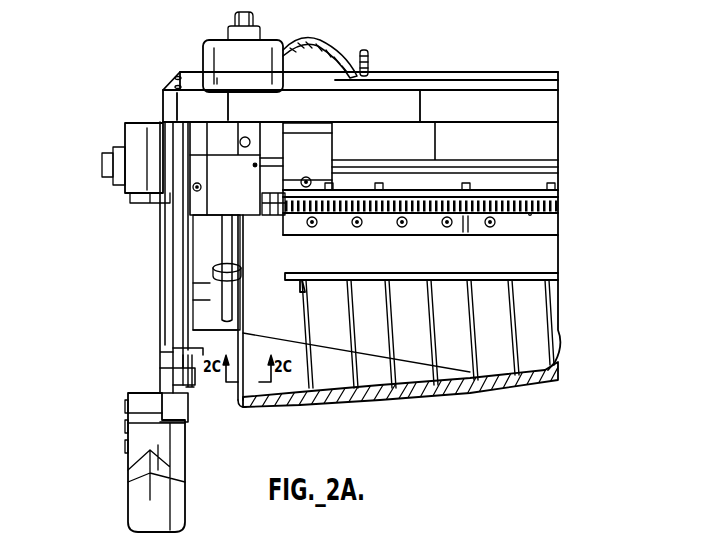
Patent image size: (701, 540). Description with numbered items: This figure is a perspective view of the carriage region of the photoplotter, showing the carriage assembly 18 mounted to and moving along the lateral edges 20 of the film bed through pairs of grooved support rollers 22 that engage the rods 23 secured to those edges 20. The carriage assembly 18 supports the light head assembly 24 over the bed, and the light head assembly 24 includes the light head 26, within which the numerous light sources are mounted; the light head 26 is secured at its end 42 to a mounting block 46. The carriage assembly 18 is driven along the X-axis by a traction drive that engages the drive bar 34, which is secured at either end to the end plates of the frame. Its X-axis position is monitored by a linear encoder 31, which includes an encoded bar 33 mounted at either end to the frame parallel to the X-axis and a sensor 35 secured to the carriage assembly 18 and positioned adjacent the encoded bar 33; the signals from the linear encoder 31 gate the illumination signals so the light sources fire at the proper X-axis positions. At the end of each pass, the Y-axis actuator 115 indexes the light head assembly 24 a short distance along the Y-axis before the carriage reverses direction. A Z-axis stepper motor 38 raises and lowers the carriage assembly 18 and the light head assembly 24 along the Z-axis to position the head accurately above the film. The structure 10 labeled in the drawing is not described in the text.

The finned structure / base 10 is at (448, 380).
The carriage assembly 18 is at (178, 74).
The lateral edges 20 is at (246, 404).
The grooved support rollers 22 is at (240, 283).
The rods 23 is at (250, 409).
The light head assembly 24 is at (382, 228).
The light head 26 is at (428, 225).
The linear encoder 31 is at (110, 366).
The encoded bar 33 is at (168, 373).
The drive bar 34 is at (193, 383).
The sensor 35 is at (146, 504).
The Z-axis stepper motors 38 is at (213, 62).
The end 42 is at (290, 232).
The mounting blocks 46 is at (316, 166).
The Y-axis actuator 115 is at (138, 138).